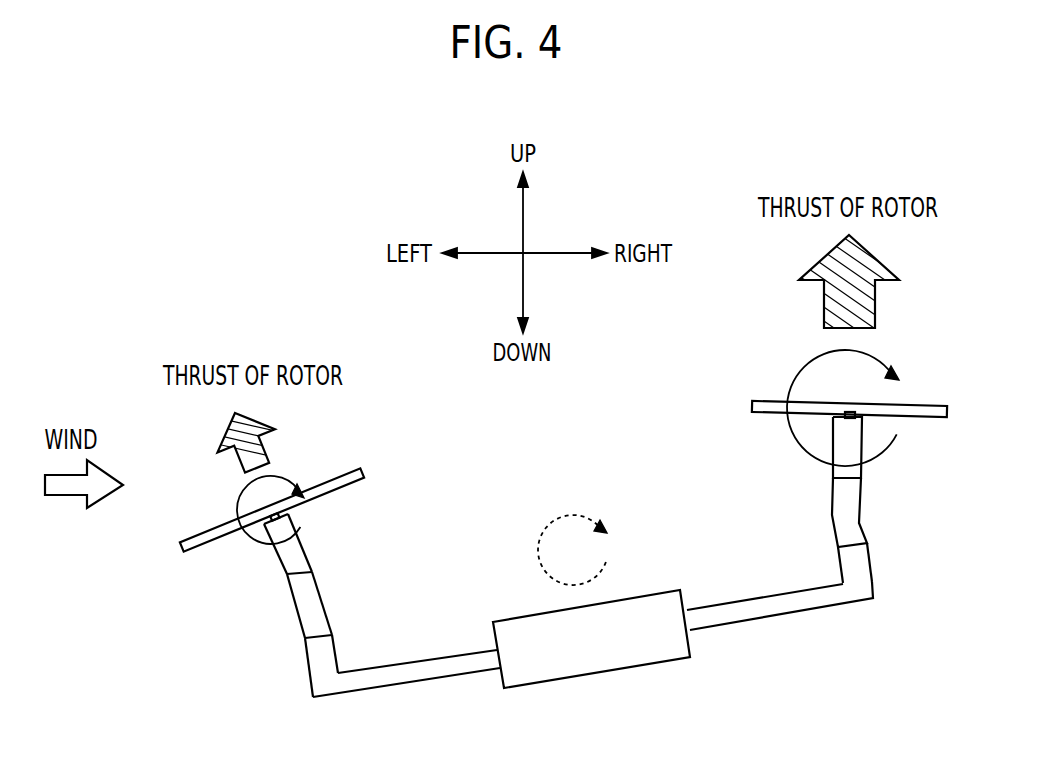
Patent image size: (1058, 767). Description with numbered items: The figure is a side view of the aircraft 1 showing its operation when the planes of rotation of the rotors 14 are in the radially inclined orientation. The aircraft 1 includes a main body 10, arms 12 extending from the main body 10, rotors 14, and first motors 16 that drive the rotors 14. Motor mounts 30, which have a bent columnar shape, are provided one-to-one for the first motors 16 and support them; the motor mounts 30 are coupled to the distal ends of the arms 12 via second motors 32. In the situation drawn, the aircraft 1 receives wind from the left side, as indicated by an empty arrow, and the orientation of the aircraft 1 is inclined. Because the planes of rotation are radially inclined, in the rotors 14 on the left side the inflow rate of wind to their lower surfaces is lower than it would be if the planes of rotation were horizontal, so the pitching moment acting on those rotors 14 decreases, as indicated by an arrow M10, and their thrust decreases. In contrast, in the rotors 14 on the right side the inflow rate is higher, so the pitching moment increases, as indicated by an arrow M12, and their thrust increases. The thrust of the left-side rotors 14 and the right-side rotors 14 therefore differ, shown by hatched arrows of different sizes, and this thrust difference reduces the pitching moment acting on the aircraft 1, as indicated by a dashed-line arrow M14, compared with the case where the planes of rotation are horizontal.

The aircraft 1 is at (633, 403).
The main body 10 is at (667, 591).
The arms 12 is at (400, 665).
The rotors 14 is at (368, 484).
The first motors 16 is at (288, 572).
The motor mounts 30 is at (306, 627).
The second motors 32 is at (314, 665).
The arrow M10 is at (243, 505).
The arrow M12 is at (798, 372).
The dashed-line arrow M14 is at (570, 515).